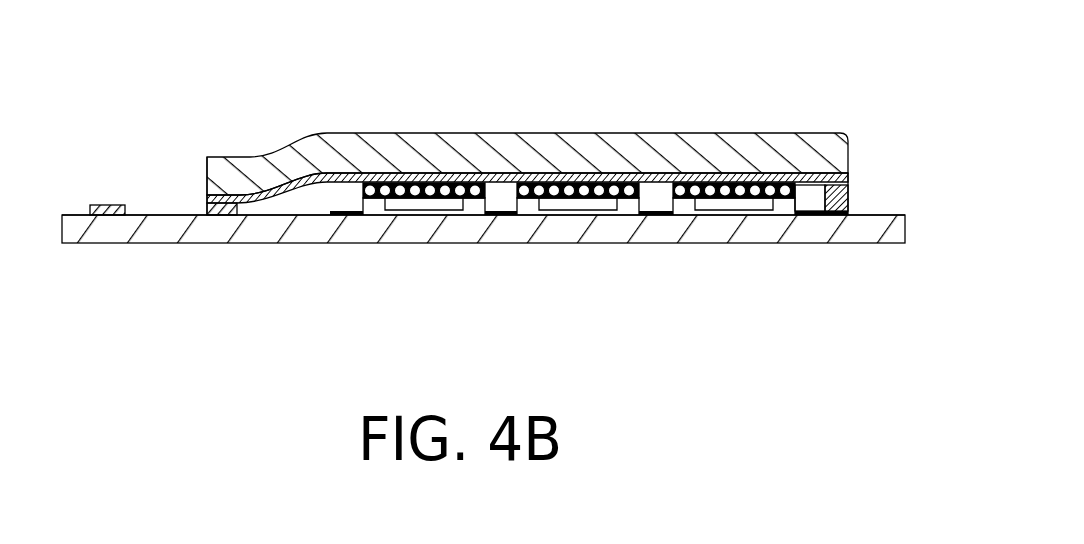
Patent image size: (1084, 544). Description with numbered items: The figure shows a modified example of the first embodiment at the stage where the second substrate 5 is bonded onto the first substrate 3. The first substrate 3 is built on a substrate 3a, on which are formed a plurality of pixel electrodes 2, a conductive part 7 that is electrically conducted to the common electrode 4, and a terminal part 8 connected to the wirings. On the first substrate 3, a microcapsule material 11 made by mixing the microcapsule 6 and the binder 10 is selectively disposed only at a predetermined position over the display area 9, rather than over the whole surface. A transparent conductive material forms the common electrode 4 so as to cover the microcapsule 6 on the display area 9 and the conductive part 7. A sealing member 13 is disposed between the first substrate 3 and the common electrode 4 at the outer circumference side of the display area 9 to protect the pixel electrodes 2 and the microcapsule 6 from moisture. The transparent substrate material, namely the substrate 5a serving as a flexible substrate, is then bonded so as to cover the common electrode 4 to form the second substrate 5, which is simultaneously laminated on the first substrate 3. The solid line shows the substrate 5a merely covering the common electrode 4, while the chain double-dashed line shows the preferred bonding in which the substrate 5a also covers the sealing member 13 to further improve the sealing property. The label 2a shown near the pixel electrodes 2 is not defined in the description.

The pixel electrodes 2 is at (580, 263).
The semiconductor element (chip) 2a is at (805, 325).
The first substrate 3 is at (277, 243).
The substrate 3a is at (193, 219).
The common electrode 4 is at (730, 55).
The second substrate 5 is at (585, 108).
The substrate 5a is at (700, 147).
The microcapsule 6 is at (487, 55).
The conductive part 7 is at (206, 212).
The terminal part 8 is at (112, 205).
The display area 9 is at (589, 284).
The binder 10 is at (456, 185).
The microcapsule material 11 is at (579, 99).
The sealing member 13 is at (841, 216).